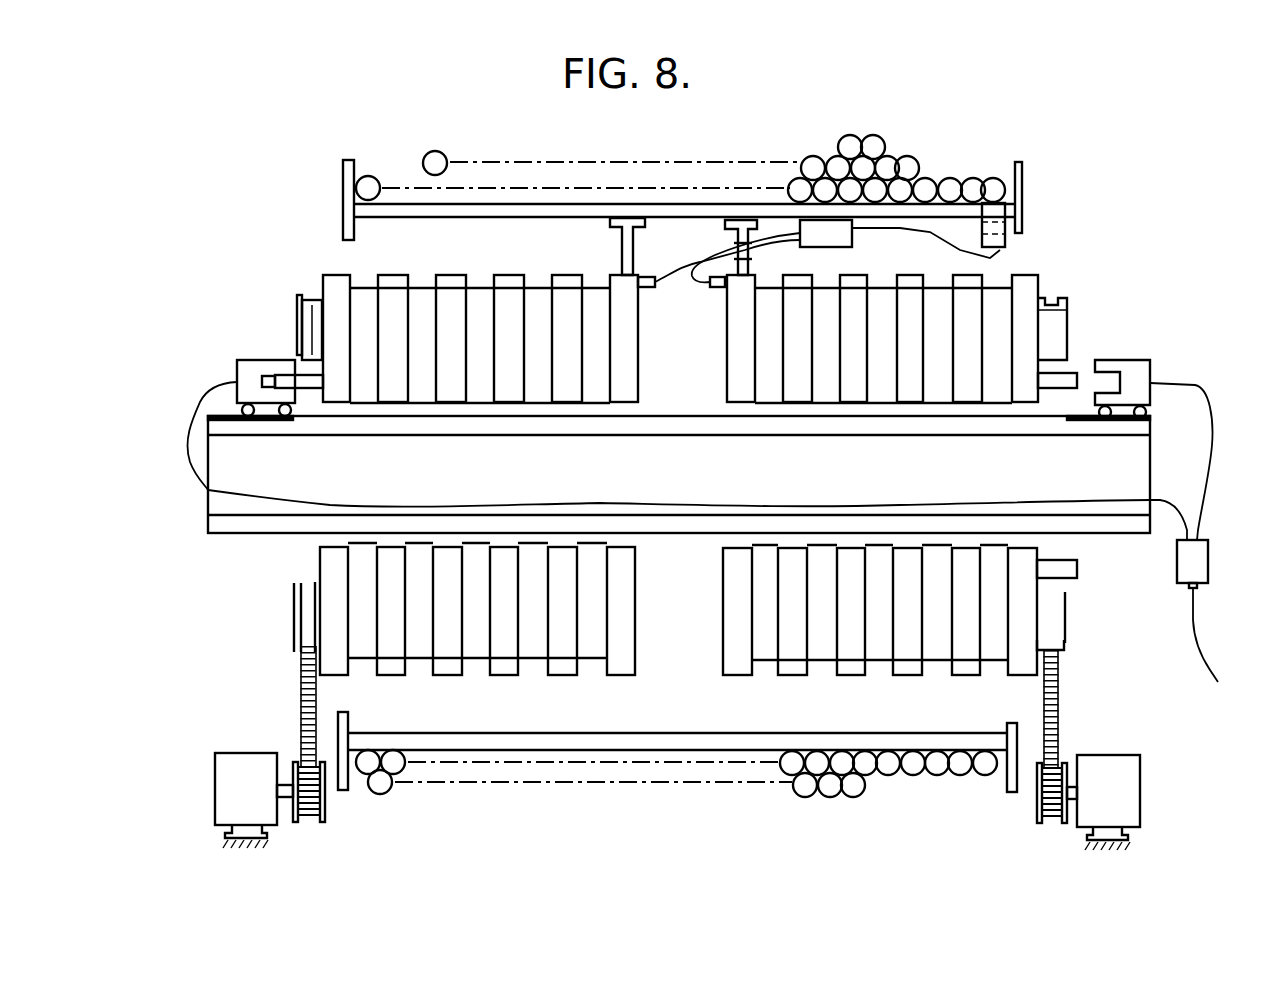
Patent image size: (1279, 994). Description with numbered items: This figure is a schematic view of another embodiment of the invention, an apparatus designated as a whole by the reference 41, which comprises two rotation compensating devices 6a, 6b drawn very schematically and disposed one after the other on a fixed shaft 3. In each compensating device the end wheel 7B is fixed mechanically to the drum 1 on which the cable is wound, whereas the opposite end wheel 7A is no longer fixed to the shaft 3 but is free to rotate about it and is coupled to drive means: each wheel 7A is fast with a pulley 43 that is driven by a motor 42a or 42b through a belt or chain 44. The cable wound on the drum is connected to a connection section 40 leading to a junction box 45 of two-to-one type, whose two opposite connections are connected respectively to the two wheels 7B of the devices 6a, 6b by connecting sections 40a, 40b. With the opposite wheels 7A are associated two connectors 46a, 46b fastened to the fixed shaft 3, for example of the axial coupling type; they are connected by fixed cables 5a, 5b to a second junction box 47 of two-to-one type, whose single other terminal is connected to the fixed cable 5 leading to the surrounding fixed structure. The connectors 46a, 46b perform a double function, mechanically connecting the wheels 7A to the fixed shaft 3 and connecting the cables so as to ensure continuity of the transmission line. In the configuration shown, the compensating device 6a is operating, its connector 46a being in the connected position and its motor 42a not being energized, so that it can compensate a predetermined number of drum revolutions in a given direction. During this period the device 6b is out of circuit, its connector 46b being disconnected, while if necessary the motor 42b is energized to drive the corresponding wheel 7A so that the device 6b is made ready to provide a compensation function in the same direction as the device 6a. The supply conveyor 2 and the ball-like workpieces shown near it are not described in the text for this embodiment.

The drum 1 is at (907, 123).
The supply conveyor 2 is at (540, 210).
The fixed shaft 3 is at (1110, 430).
The fixed cable 5 is at (1200, 647).
The fixed cable 5a is at (185, 450).
The fixed cable 5b is at (1205, 393).
The compensating device 6a is at (337, 272).
The compensating device 6b is at (1025, 273).
The opposite end wheel 7A is at (332, 388).
The end wheel 7B is at (740, 353).
The connection section 40 is at (943, 232).
The connecting section 40a is at (783, 235).
The connecting section 40b is at (700, 283).
The apparatus 41 is at (297, 540).
The motor 42a is at (230, 760).
The motor 42b is at (1125, 790).
The pulley 43 is at (308, 332).
The belt or chain 44 is at (305, 688).
The junction box 45 is at (838, 233).
The connector 46a is at (252, 375).
The connector 46b is at (1135, 373).
The junction box 47 is at (1193, 562).